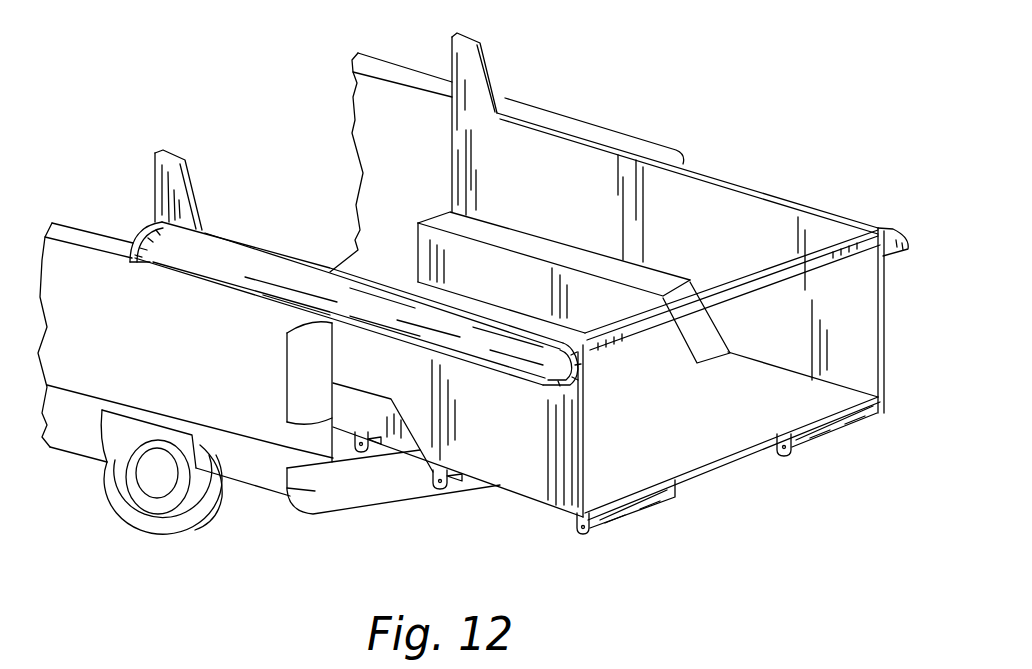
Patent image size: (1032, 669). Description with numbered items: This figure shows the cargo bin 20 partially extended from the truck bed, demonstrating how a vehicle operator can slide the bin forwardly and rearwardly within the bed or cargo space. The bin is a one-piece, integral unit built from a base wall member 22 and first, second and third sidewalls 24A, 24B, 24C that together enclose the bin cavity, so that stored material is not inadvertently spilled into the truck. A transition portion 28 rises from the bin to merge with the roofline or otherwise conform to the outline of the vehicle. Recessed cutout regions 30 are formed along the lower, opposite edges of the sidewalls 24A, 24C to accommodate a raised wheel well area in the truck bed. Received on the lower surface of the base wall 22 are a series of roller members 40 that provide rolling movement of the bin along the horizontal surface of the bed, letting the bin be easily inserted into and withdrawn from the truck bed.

The cargo bin 20 is at (805, 196).
The base wall member 22 is at (722, 427).
The first sidewall 24A is at (497, 421).
The second sidewall 24B is at (665, 293).
The third sidewall 24C is at (587, 185).
The transition portion 28 is at (197, 190).
The recessed cutout region 30 is at (652, 273).
The roller member 40 is at (378, 452).